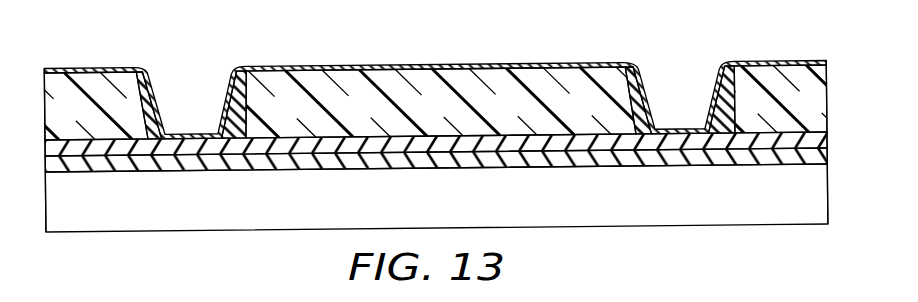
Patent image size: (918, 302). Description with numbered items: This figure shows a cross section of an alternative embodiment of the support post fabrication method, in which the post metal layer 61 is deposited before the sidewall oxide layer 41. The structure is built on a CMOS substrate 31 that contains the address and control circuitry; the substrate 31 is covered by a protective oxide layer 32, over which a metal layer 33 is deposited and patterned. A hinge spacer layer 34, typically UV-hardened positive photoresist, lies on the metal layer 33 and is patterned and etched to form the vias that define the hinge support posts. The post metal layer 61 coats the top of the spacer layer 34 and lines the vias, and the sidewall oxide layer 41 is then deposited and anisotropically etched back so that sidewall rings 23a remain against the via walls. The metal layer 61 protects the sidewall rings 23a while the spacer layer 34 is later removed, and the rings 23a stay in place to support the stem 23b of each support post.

The post metal layer 61 is at (77, 68).
The sidewall oxide layer 41 is at (435, 88).
The sidewall ring 23a is at (170, 64).
The support post stem 23b is at (244, 93).
The hinge spacer layer 34 is at (452, 121).
The metal layer 33 is at (827, 146).
The protective oxide layer 32 is at (827, 165).
The CMOS substrate 31 is at (453, 216).